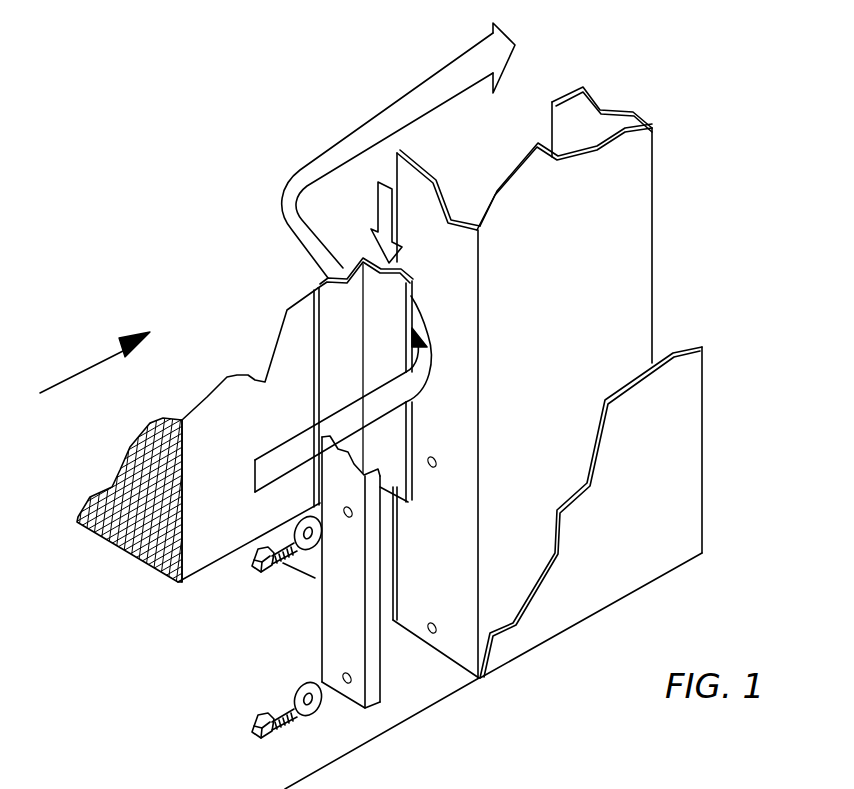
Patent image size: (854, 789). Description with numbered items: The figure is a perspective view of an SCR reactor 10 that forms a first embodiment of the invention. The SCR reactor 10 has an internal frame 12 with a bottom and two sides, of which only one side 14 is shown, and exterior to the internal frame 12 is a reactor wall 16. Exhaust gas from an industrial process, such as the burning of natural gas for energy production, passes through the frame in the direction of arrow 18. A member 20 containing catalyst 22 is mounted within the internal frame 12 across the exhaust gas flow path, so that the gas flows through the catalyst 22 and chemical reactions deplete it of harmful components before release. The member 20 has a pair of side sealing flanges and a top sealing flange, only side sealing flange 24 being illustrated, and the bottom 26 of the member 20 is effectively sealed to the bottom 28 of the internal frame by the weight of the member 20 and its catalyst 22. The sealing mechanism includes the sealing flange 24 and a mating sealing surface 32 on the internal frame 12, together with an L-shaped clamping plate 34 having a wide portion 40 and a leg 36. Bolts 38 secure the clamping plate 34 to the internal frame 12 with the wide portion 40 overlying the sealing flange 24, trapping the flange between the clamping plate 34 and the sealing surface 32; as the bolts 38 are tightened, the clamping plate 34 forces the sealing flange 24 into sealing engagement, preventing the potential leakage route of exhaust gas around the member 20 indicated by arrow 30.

The SCR reactor 10 is at (172, 145).
The internal frame 12 is at (637, 113).
The side 14 is at (583, 264).
The reactor wall 16 is at (687, 453).
The arrow 18 is at (70, 375).
The member 20 is at (247, 383).
The catalyst 22 is at (122, 483).
The side sealing flange 24 is at (400, 277).
The bottom 26 is at (191, 580).
The bottom 28 is at (317, 571).
The arrow 30 is at (380, 118).
The sealing surface 32 is at (428, 224).
The clamping plate 34 is at (330, 633).
The leg 36 is at (373, 660).
The bolts 38 is at (257, 572).
The wide portion 40 is at (356, 599).